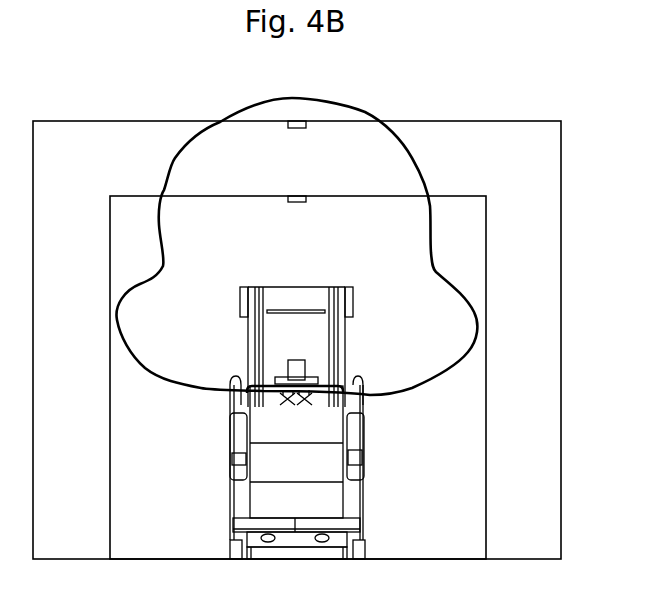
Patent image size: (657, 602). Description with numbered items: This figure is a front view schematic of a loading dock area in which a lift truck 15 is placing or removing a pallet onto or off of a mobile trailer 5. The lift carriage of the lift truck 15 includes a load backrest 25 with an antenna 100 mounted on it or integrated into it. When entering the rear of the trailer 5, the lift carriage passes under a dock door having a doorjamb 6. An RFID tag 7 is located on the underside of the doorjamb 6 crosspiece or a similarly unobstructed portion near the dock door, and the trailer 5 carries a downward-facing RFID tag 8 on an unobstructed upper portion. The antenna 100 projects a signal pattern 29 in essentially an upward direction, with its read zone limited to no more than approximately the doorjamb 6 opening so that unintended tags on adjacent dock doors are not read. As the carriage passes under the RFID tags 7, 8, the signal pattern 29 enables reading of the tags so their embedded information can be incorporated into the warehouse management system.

The mobile trailer 5 is at (486, 396).
The doorjamb 6 is at (561, 351).
The RFID tag 7 is at (296, 128).
The RFID tag 8 is at (296, 202).
The lift truck 15 is at (208, 439).
The load backrest 25 is at (250, 352).
The signal pattern 29 is at (422, 167).
The antenna 100 is at (302, 390).